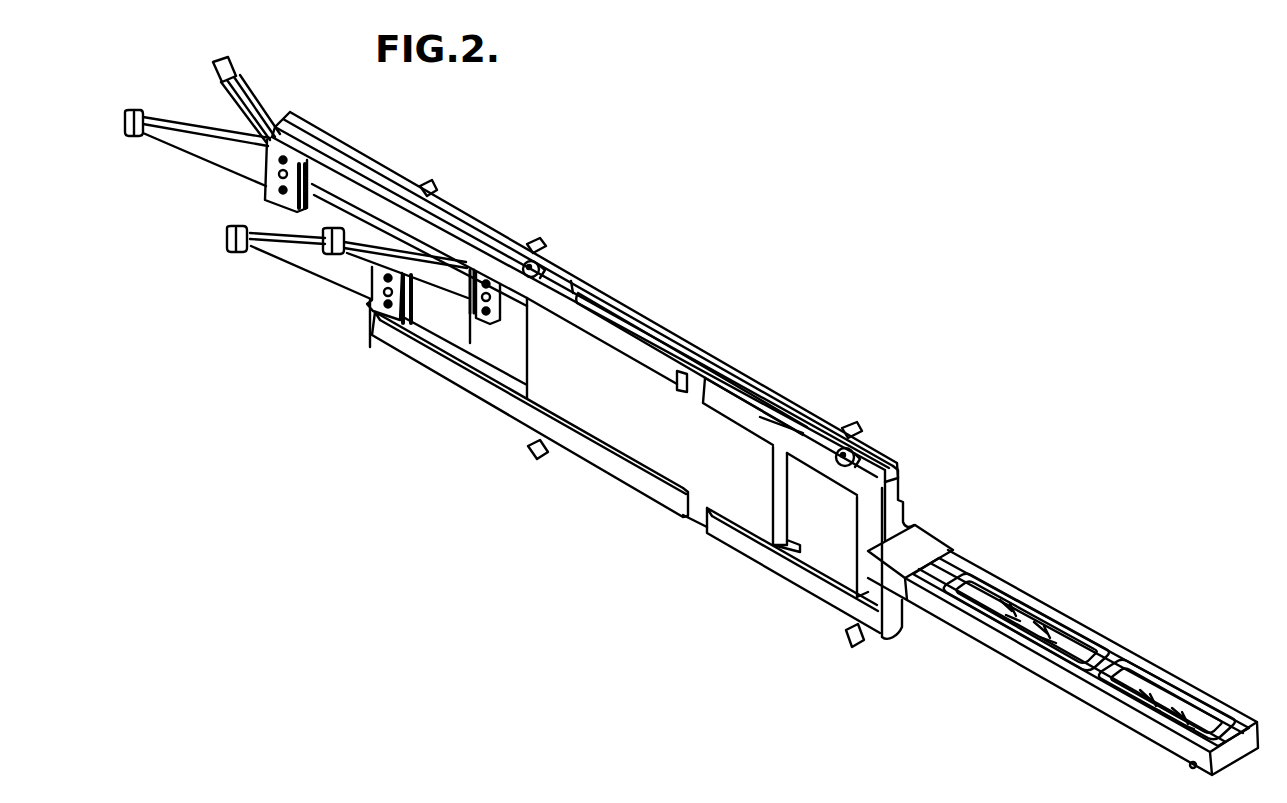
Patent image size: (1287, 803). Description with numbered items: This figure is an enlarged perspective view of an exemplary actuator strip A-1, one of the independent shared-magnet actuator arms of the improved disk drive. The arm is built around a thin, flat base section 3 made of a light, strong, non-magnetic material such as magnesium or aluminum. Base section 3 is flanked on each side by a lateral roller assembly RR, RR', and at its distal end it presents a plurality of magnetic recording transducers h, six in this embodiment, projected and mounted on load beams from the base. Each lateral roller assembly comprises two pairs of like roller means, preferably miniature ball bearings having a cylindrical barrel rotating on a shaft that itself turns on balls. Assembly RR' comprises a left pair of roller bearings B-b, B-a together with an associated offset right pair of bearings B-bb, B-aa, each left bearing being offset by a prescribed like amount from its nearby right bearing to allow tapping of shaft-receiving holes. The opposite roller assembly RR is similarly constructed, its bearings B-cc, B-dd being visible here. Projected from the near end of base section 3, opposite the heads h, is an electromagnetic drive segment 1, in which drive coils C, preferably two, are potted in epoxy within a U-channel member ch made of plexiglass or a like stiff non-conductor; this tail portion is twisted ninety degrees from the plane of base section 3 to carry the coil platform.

The lateral roller assembly RR' is at (585, 290).
The lateral roller assembly RR is at (592, 472).
The base section 3 is at (662, 436).
The magnetic recording transducer h is at (224, 70).
The roller bearing B-b is at (530, 238).
The roller bearing B-bb is at (546, 272).
The roller bearing B-a is at (848, 424).
The roller bearing B-aa is at (862, 452).
The roller bearing B-cc is at (526, 452).
The roller bearing B-dd is at (848, 646).
The actuator strip A-1 is at (798, 320).
The coil C is at (1018, 574).
The drive segment 1 is at (1090, 628).
The U-channel member ch is at (1190, 768).